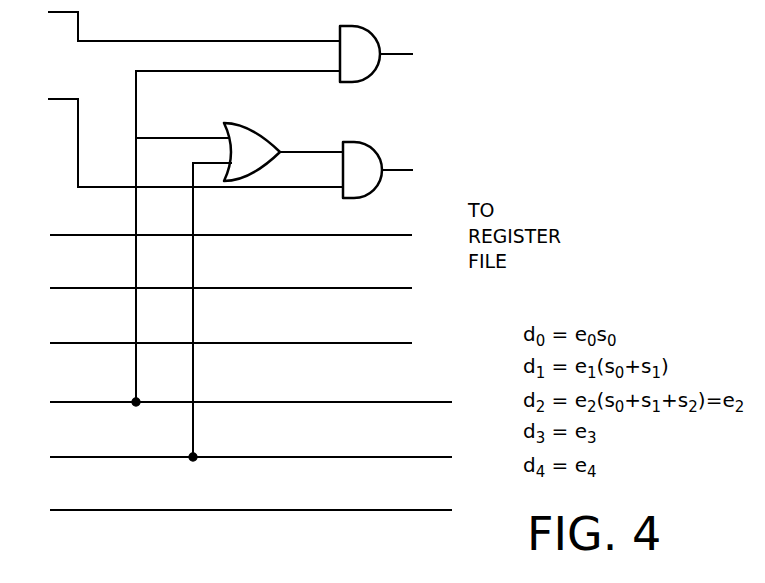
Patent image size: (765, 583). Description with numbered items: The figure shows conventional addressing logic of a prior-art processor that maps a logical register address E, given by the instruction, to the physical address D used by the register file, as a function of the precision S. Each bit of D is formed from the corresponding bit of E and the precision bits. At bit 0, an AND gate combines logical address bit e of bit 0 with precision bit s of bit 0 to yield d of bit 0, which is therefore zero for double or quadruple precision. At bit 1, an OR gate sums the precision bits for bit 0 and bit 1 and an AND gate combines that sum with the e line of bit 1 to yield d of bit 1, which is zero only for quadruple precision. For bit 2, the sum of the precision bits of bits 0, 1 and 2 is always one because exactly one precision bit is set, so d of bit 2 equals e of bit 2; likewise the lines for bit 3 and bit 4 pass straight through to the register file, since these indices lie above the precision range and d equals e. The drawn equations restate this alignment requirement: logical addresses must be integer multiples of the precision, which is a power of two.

The bit position zero 0 is at (234, 211).
The bit position one 1 is at (234, 284).
The bit position two 2 is at (234, 375).
The bit position three 3 is at (229, 293).
The bit position four 4 is at (229, 347).